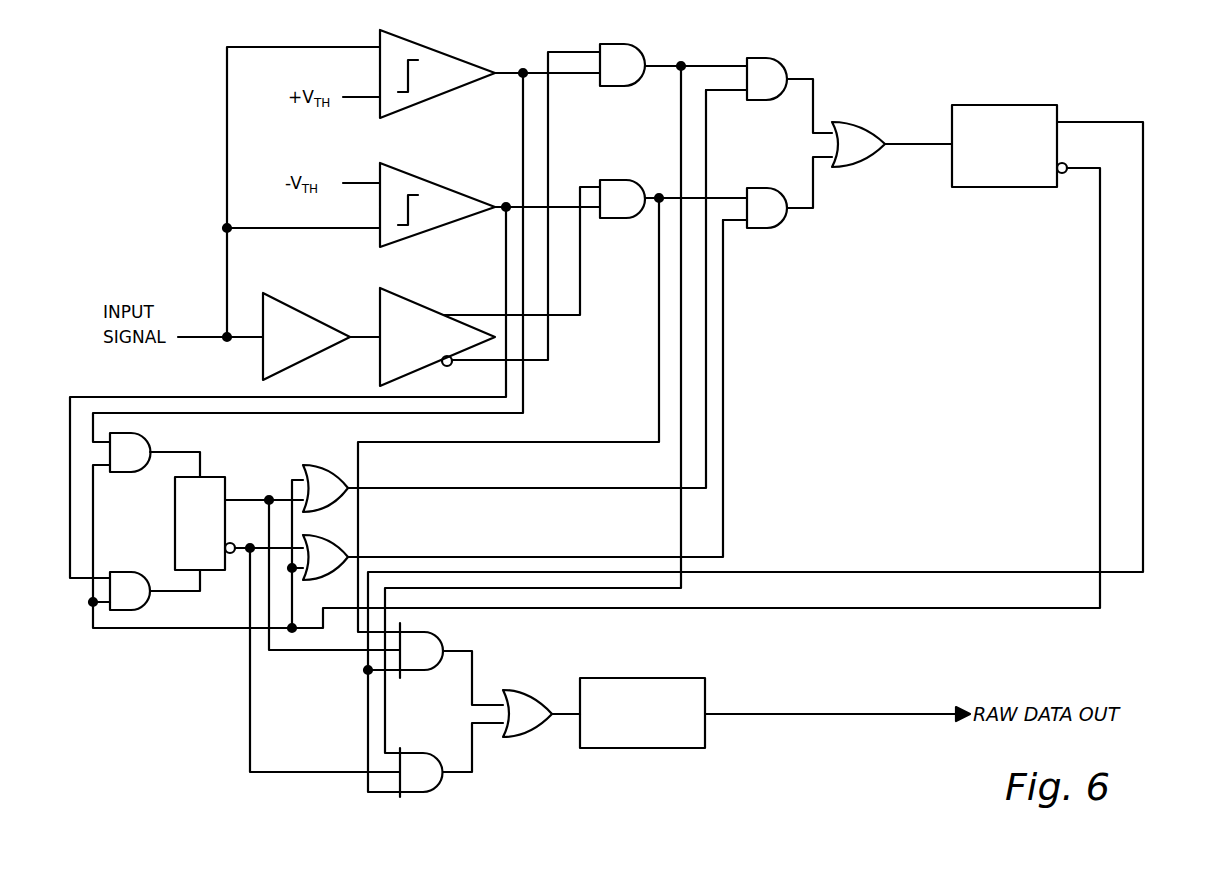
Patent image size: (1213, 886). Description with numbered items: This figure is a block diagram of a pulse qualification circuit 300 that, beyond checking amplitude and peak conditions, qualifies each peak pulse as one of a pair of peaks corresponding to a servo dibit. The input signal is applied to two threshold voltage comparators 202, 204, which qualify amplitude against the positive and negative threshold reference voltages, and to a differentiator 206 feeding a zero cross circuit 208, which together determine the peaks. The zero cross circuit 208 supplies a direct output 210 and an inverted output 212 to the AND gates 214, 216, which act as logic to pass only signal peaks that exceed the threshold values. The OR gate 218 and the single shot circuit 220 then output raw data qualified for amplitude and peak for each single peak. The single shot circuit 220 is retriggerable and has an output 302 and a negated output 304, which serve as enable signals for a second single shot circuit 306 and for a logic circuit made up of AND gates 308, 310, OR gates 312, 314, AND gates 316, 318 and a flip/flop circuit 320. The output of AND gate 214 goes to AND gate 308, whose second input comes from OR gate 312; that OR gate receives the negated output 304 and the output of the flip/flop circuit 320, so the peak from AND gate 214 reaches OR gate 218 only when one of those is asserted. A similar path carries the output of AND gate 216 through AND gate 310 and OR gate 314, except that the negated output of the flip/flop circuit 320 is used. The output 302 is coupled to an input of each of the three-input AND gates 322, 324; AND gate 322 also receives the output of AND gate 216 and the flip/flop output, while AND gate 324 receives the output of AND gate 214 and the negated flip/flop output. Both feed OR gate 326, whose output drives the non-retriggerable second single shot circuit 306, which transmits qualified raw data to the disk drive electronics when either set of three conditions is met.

The threshold voltage comparator 202 is at (437, 50).
The threshold voltage comparator 204 is at (430, 176).
The differentiator 206 is at (272, 300).
The zero cross circuit 208 is at (392, 293).
The zero cross detector output 210 is at (455, 313).
The zero cross detector inverted output 212 is at (500, 366).
The AND gate 214 is at (622, 44).
The AND gate 216 is at (612, 180).
The OR gate 218 is at (855, 122).
The single shot circuit 220 is at (1008, 105).
The qualification circuit 300 is at (203, 662).
The output 302 is at (1100, 122).
The negated output 304 is at (1070, 165).
The second single shot circuit 306 is at (660, 678).
The AND gate 308 is at (762, 58).
The AND gate 310 is at (770, 228).
The OR gate 312 is at (340, 444).
The OR gate 314 is at (330, 540).
The AND gate 316 is at (140, 440).
The AND gate 318 is at (112, 572).
The flip/flop circuit 320 is at (210, 477).
The AND gate 322 is at (420, 634).
The AND gate 324 is at (410, 753).
The OR gate 326 is at (508, 690).